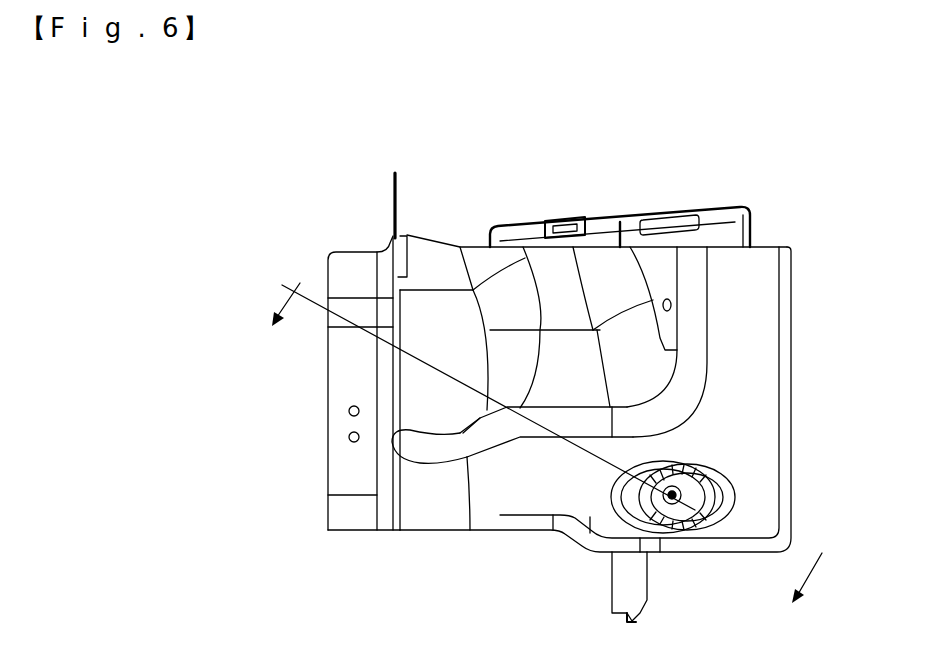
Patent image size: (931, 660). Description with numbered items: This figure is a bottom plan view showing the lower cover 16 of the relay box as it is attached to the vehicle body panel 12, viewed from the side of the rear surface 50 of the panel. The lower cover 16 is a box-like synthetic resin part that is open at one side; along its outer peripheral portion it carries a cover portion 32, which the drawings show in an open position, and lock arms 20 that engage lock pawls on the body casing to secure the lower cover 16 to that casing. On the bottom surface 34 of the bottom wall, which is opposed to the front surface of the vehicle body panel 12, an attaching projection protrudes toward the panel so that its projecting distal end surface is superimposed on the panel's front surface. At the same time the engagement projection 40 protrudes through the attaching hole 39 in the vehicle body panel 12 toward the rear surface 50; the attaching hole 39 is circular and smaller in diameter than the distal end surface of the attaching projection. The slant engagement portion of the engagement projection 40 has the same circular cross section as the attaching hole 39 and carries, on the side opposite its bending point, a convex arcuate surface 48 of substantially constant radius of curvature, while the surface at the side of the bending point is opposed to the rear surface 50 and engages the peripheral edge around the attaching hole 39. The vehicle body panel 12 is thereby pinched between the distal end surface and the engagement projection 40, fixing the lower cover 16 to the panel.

The vehicle body panel 12 is at (812, 277).
The lower cover 16 is at (740, 170).
The lock arm 20 is at (560, 216).
The bottom surface 34 is at (640, 230).
The rear surface 50 is at (760, 363).
The engagement projection 40 is at (712, 485).
The arcuate surface 48 is at (700, 540).
The attaching hole 39 is at (657, 538).
The cover portion 32 is at (626, 570).